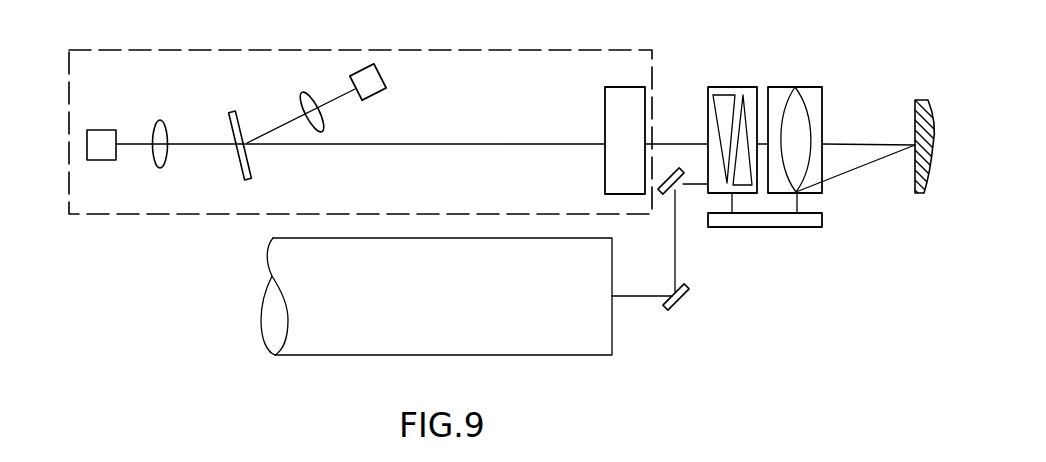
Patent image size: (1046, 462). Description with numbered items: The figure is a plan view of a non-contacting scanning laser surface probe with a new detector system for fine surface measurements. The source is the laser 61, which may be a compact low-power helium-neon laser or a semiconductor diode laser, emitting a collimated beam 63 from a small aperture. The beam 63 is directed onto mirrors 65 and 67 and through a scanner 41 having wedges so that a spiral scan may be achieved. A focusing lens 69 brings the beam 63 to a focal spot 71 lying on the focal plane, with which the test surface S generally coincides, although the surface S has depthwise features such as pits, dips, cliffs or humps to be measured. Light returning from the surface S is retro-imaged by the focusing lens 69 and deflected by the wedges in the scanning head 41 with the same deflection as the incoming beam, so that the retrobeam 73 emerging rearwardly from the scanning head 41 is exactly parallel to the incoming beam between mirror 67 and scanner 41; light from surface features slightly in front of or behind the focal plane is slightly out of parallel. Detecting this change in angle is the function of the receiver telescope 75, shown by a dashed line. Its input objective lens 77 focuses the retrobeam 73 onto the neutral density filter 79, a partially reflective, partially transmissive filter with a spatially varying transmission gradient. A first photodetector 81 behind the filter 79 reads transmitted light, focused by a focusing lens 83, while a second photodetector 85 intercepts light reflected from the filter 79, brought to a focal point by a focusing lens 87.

The receiver telescope 75 is at (470, 50).
The first photodetector 81 is at (100, 130).
The focusing lens 83 is at (163, 121).
The neutral density filter 79 is at (233, 112).
The focusing lens 87 is at (301, 92).
The second photodetector 85 is at (377, 63).
The input objective lens 77 is at (622, 86).
The retrobeam 73 is at (674, 142).
The scanner 41 is at (745, 87).
The focusing lens 69 is at (800, 87).
The focal spot 71 is at (913, 144).
The test surface S is at (915, 193).
The mirror 67 is at (663, 195).
The mirror 65 is at (687, 292).
The collimated beam 63 is at (637, 296).
The laser 61 is at (573, 355).